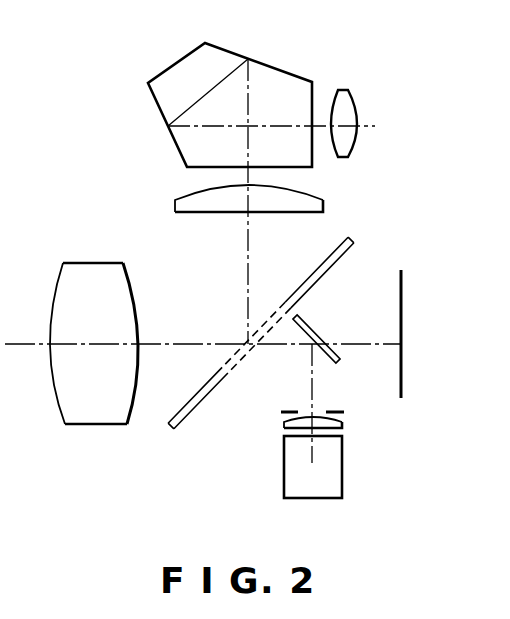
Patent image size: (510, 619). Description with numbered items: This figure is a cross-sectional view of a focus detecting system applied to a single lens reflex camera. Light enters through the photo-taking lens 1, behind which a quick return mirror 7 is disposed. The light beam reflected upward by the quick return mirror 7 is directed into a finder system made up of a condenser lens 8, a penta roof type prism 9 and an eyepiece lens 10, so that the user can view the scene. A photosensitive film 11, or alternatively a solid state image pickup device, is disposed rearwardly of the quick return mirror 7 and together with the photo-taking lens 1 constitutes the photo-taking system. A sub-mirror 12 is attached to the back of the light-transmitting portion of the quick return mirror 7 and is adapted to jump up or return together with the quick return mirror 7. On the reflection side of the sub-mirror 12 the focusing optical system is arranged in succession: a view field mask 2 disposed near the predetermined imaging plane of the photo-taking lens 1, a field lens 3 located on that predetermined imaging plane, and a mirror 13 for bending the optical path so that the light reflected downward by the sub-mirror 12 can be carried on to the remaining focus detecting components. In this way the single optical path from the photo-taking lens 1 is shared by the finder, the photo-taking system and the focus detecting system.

The photo-taking lens 1 is at (96, 277).
The view field mask 2 is at (288, 409).
The field lens 3 is at (342, 420).
The quick return mirror 7 is at (198, 408).
The condenser lens 8 is at (322, 202).
The penta roof type prism 9 is at (288, 82).
The eyepiece lens 10 is at (348, 100).
The photosensitive film 11 is at (401, 290).
The sub-mirror 12 is at (342, 362).
The mirror 13 is at (335, 475).